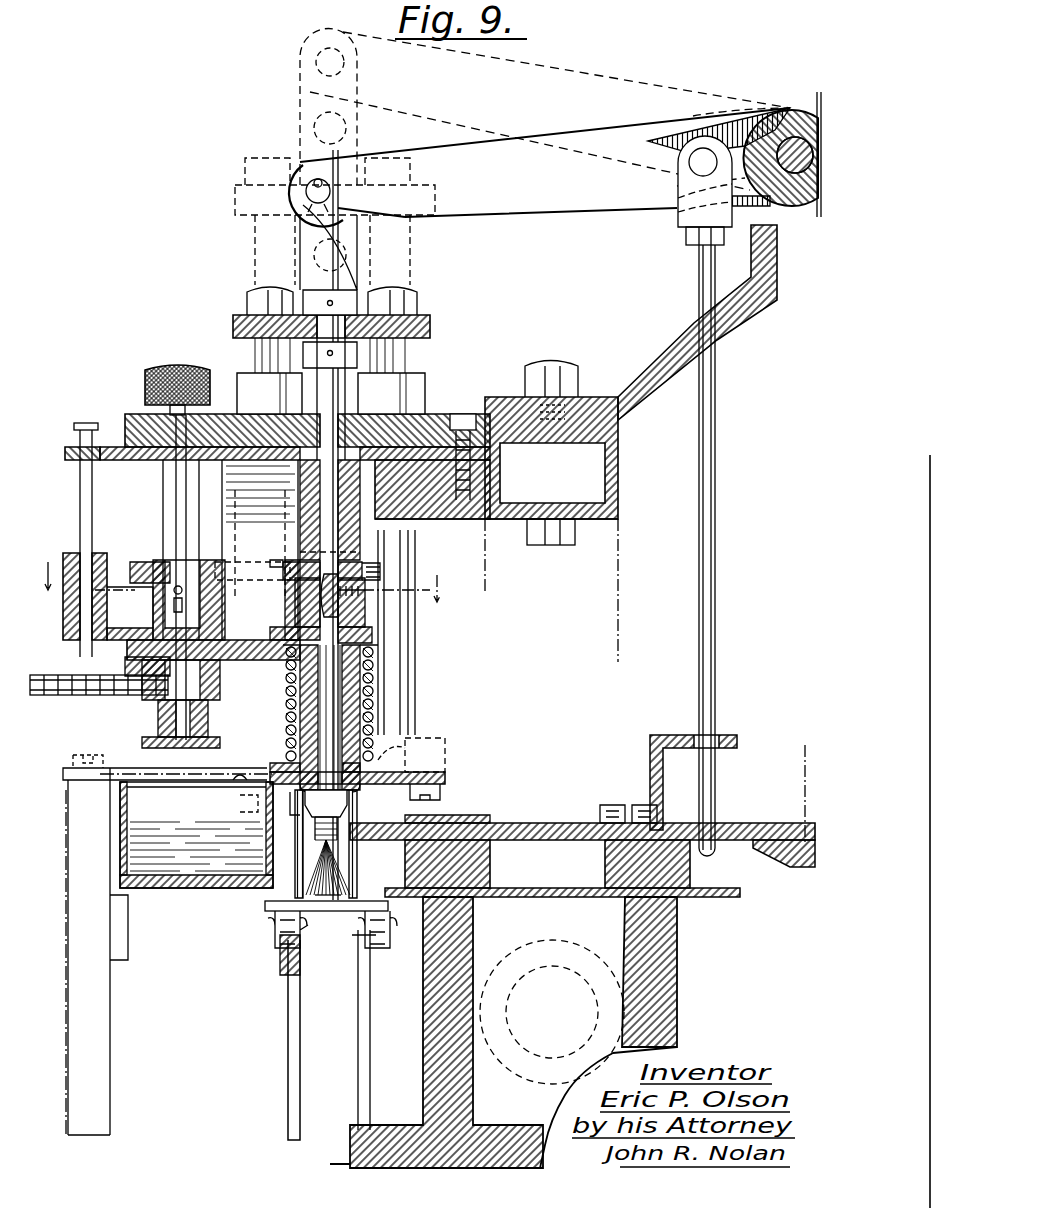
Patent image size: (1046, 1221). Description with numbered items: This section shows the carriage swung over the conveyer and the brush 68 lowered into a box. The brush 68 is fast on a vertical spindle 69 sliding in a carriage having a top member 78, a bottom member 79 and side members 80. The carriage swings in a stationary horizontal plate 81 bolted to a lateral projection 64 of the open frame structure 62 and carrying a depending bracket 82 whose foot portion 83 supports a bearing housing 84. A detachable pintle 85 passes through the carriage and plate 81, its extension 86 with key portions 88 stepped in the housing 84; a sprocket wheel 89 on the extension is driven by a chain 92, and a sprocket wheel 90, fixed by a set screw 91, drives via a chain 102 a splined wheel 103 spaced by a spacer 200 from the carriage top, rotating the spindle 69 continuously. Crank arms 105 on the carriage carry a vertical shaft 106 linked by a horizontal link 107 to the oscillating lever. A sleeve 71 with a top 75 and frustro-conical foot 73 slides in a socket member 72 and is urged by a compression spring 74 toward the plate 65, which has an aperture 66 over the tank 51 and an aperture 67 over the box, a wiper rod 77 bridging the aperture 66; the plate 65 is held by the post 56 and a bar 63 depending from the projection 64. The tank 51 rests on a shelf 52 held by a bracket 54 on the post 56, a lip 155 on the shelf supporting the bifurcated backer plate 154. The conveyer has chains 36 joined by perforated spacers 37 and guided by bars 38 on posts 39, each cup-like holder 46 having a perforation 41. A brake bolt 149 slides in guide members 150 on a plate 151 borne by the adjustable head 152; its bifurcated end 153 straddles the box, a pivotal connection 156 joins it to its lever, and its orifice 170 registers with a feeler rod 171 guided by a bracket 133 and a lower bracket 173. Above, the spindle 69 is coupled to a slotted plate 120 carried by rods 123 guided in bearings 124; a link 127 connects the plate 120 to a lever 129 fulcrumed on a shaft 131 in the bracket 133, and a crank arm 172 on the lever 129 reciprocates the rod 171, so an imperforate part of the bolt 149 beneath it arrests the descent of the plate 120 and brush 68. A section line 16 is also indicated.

The lever 129 is at (300, 52).
The link 127 is at (305, 100).
The plate 120 is at (245, 190).
The depending rods 123 is at (255, 228).
The vertical bearings 124 is at (238, 392).
The shaft 131 is at (788, 110).
The crank arm 172 is at (712, 138).
The feeler rod 171 is at (717, 652).
The bearing bracket 133 is at (672, 352).
The frame structure 62 is at (610, 490).
The lateral projection 64 is at (495, 517).
The top member 78 is at (385, 416).
The spindle 69 is at (340, 400).
The horizontal plate 81 is at (122, 414).
The crank arms 105 is at (120, 416).
The vertical shaft 106 is at (80, 425).
The depending bracket 82 is at (160, 480).
The pintle 85 is at (176, 498).
The sprocket wheel 90 is at (150, 565).
The set screw 91 is at (180, 586).
The horizontal link 107 is at (124, 613).
The section line 16 is at (243, 596).
The foot portion 83 is at (120, 650).
The key portions 88 is at (135, 668).
The sprocket wheel 89 is at (145, 690).
The pintle extension 86 is at (172, 720).
The bearing housing 84 is at (138, 740).
The chain 92 is at (52, 696).
The side members 80 is at (261, 550).
The chain 102 is at (255, 562).
The spacer 200 is at (362, 535).
The sprocket wheel 103 is at (375, 565).
The bottom member 79 is at (375, 633).
The sleeve 71 is at (362, 720).
The socket member 72 is at (370, 668).
The compression spring 74 is at (375, 700).
The sleeve top 75 is at (365, 660).
The plate 65 is at (450, 774).
The foot 73 is at (358, 784).
The wiper rod 77 is at (425, 755).
The aperture 67 is at (398, 785).
The bar 63 is at (448, 738).
The bifurcated plate 154 is at (296, 815).
The brush 68 is at (345, 868).
The plate 46 is at (288, 905).
The bifurcated end 153 is at (296, 830).
The perforation 41 is at (334, 898).
The conveyer chains 36 is at (272, 935).
The guide bars 38 is at (278, 970).
The spacers 37 is at (356, 940).
The posts 39 is at (356, 1102).
The tank 51 is at (120, 832).
The shelf 52 is at (120, 882).
The aperture 66 is at (175, 770).
The lip 155 is at (238, 812).
The bracket 54 is at (108, 920).
The post 56 is at (105, 982).
The bolt 149 is at (570, 823).
The guide members 150 is at (470, 870).
The plate 151 is at (742, 893).
The adjustable head 152 is at (680, 935).
The orifice 170 is at (716, 840).
The pivotal connection 156 is at (805, 800).
The bracket 173 is at (740, 740).